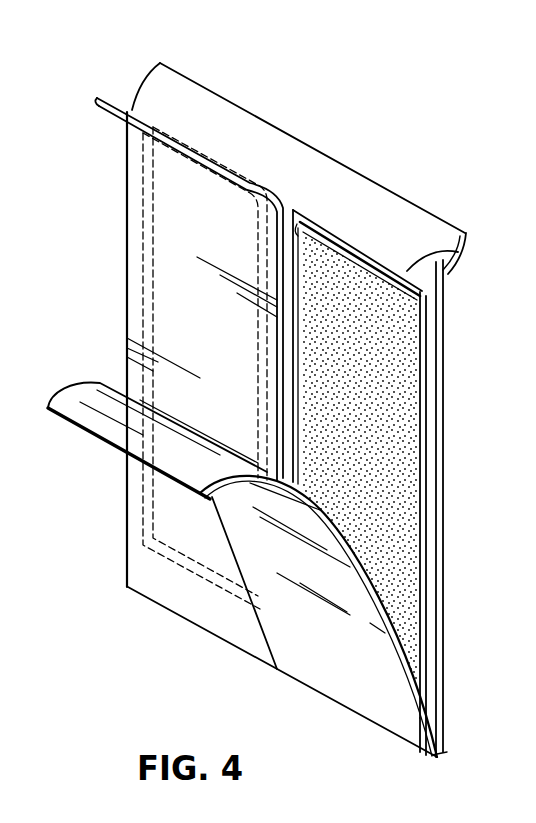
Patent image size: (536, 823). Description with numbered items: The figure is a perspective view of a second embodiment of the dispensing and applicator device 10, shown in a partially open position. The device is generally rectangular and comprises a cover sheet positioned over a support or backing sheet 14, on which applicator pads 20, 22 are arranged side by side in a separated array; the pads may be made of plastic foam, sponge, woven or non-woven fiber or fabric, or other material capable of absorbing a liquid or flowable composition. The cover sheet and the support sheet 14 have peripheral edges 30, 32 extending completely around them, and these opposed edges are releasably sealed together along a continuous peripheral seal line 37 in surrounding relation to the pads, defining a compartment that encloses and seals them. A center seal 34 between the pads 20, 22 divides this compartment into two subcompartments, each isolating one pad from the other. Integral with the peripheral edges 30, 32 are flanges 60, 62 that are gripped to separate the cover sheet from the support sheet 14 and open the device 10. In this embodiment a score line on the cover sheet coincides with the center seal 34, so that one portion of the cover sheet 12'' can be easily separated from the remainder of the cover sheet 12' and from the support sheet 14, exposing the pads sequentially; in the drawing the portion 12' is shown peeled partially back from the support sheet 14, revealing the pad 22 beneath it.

The dispensing and applicator device 10 is at (342, 82).
The flange 62 is at (207, 95).
The support or backing sheet 14 is at (456, 235).
The continuous peripheral seal line 37 is at (452, 255).
The peripheral edge 32 is at (437, 473).
The center seal 34 is at (308, 230).
The applicator pad 22 is at (390, 387).
The flange 60 is at (116, 101).
The peripheral edge 30 is at (125, 163).
The portion of cover sheet 12'' is at (162, 368).
The applicator pad 20 is at (170, 300).
The remainder of cover sheet 12' is at (314, 616).